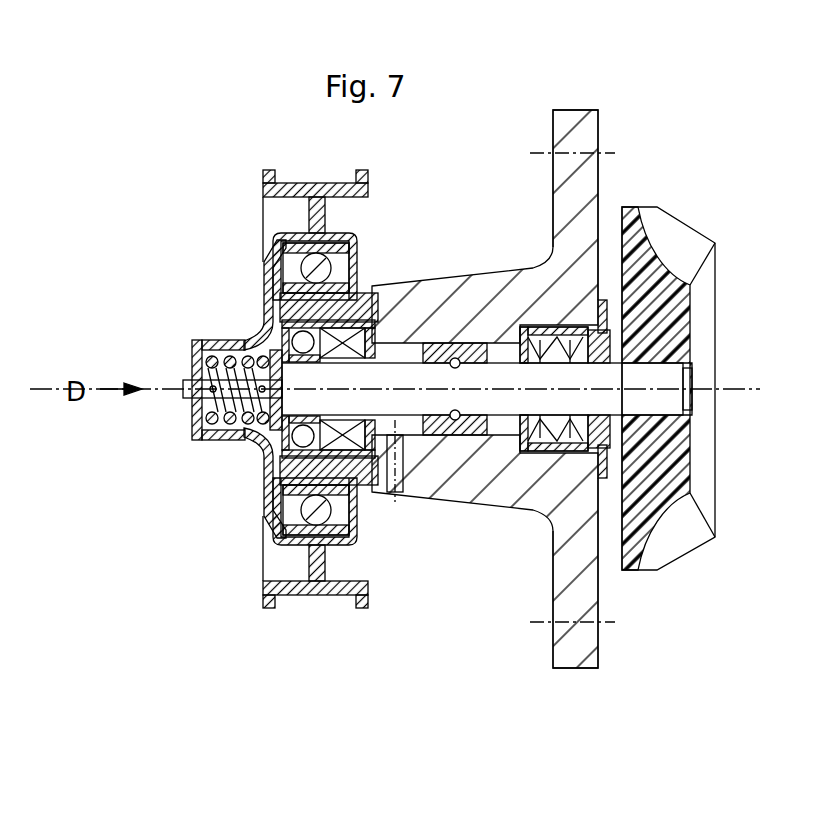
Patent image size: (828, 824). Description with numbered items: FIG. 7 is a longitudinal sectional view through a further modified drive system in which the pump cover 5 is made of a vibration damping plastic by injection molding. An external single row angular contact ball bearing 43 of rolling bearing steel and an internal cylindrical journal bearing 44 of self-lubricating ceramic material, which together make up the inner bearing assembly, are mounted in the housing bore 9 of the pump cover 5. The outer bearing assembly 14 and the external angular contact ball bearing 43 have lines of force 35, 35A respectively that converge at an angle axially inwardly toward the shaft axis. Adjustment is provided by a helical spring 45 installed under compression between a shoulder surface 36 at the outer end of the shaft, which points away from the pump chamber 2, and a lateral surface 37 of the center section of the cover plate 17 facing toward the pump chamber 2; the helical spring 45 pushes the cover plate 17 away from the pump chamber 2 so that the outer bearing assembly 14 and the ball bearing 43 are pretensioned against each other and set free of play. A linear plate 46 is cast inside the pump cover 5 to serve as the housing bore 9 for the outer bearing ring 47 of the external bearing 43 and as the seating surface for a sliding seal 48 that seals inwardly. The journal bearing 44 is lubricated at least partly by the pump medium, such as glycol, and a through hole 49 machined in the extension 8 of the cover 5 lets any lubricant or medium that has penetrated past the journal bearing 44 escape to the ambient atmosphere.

The pump chamber 2 is at (610, 217).
The pump cover 5 is at (597, 668).
The extension 8 is at (525, 270).
The housing bore 9 is at (266, 422).
The outer bearing assembly 14 is at (275, 237).
The cover plate 17 is at (278, 533).
The line of force 35 is at (272, 455).
The line of force 35A is at (280, 278).
The shoulder surface 36 is at (193, 425).
The lateral surface 37 is at (195, 370).
The external single row angular contact ball bearing 43 is at (285, 337).
The internal cylindrical journal bearing 44 is at (450, 435).
The helical spring 45 is at (197, 343).
The linear plate 46 is at (316, 385).
The outer bearing ring 47 is at (307, 497).
The sliding seal 48 is at (340, 488).
The through hole 49 is at (397, 487).